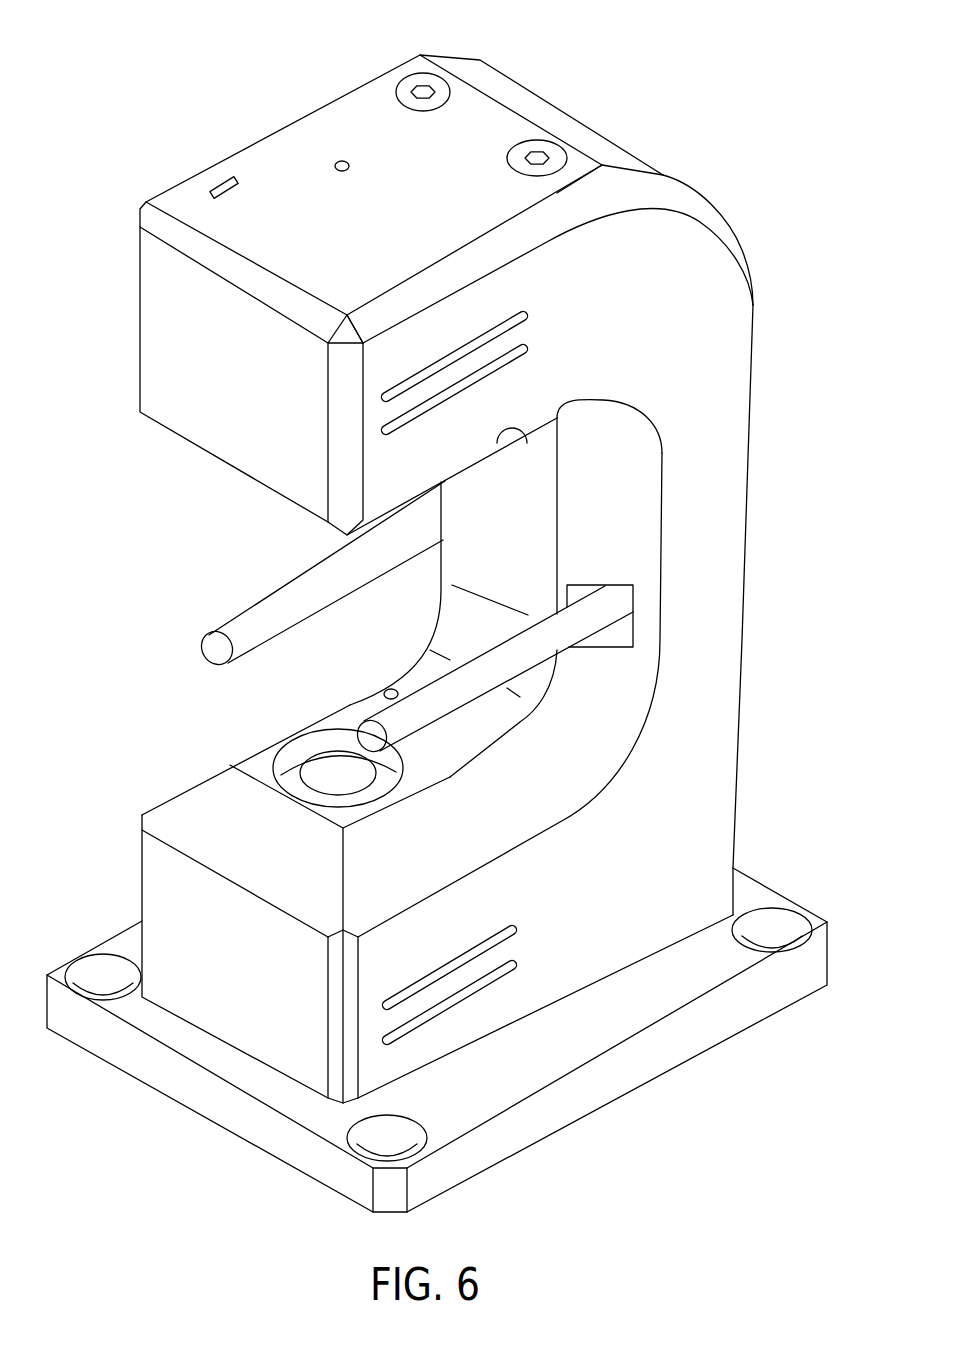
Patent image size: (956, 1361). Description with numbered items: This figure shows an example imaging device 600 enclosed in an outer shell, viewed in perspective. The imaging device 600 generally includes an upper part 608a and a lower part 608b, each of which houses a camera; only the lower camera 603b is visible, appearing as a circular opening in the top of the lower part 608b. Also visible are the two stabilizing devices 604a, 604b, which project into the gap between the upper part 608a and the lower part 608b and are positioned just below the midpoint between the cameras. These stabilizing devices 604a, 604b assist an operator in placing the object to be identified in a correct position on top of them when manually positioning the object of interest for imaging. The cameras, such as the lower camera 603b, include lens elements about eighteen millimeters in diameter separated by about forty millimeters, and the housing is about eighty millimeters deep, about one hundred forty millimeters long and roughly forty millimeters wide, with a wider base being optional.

The imaging device 600 is at (118, 103).
The upper part 608a is at (165, 375).
The lower part 608b is at (150, 805).
The stabilizing device 604a is at (205, 641).
The stabilizing device 604b is at (375, 714).
The camera 603b is at (273, 742).